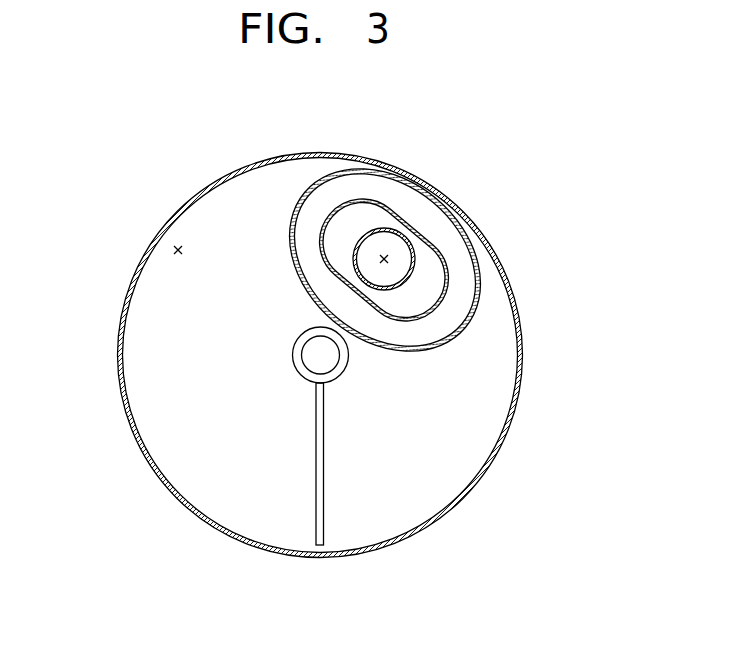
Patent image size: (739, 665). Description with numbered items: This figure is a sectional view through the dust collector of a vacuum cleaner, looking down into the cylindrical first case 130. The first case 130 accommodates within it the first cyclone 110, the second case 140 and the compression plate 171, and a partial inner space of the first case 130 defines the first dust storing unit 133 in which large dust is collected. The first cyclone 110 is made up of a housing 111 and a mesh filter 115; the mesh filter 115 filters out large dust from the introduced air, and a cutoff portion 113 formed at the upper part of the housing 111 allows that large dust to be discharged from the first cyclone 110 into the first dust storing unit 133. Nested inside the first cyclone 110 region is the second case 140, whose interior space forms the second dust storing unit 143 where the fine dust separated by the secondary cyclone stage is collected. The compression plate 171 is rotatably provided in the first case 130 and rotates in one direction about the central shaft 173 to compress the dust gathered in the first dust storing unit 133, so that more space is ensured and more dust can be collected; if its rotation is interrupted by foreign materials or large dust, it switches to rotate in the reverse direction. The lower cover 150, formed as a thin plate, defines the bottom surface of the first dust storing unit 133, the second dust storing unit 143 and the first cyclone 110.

The first cyclone 110 is at (430, 237).
The housing 111 is at (481, 268).
The cutoff portion 113 is at (337, 323).
The mesh filter 115 is at (443, 298).
The first case 130 is at (190, 197).
The first dust storing unit 133 is at (177, 251).
The second case 140 is at (357, 248).
The second dust storing unit 143 is at (384, 259).
The lower cover 150 is at (413, 433).
The compression plate 171 is at (315, 472).
The central shaft 173 is at (307, 357).